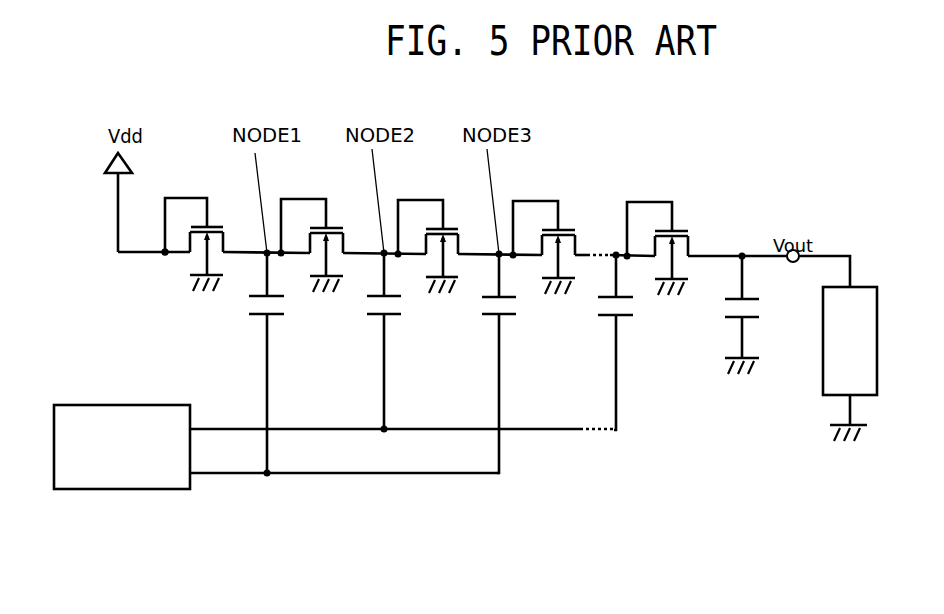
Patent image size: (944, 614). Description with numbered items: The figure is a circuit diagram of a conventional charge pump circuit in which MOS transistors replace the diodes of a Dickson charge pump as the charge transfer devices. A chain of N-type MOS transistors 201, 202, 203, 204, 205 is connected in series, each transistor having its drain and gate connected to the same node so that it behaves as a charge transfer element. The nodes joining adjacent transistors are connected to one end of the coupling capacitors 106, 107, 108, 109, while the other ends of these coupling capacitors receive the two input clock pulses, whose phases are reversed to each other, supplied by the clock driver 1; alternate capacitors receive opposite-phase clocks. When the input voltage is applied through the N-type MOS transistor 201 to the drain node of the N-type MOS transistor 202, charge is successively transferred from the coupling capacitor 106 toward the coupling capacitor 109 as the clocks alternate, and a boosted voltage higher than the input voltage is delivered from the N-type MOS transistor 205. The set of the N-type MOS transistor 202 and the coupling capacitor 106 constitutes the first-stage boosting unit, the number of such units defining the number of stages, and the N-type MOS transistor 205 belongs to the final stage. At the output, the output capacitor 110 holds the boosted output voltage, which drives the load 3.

The clock driver 1 is at (128, 489).
The load 3 is at (823, 358).
The coupling capacitor 106 is at (247, 303).
The coupling capacitor 107 is at (366, 303).
The coupling capacitor 108 is at (480, 304).
The coupling capacitor 109 is at (597, 304).
The output capacitor 110 is at (722, 305).
The N-type MOS transistor 201 is at (193, 235).
The N-type MOS transistor 202 is at (311, 235).
The N-type MOS transistor 203 is at (427, 236).
The N-type MOS transistor 204 is at (543, 235).
The N-type MOS transistor 205 is at (656, 236).